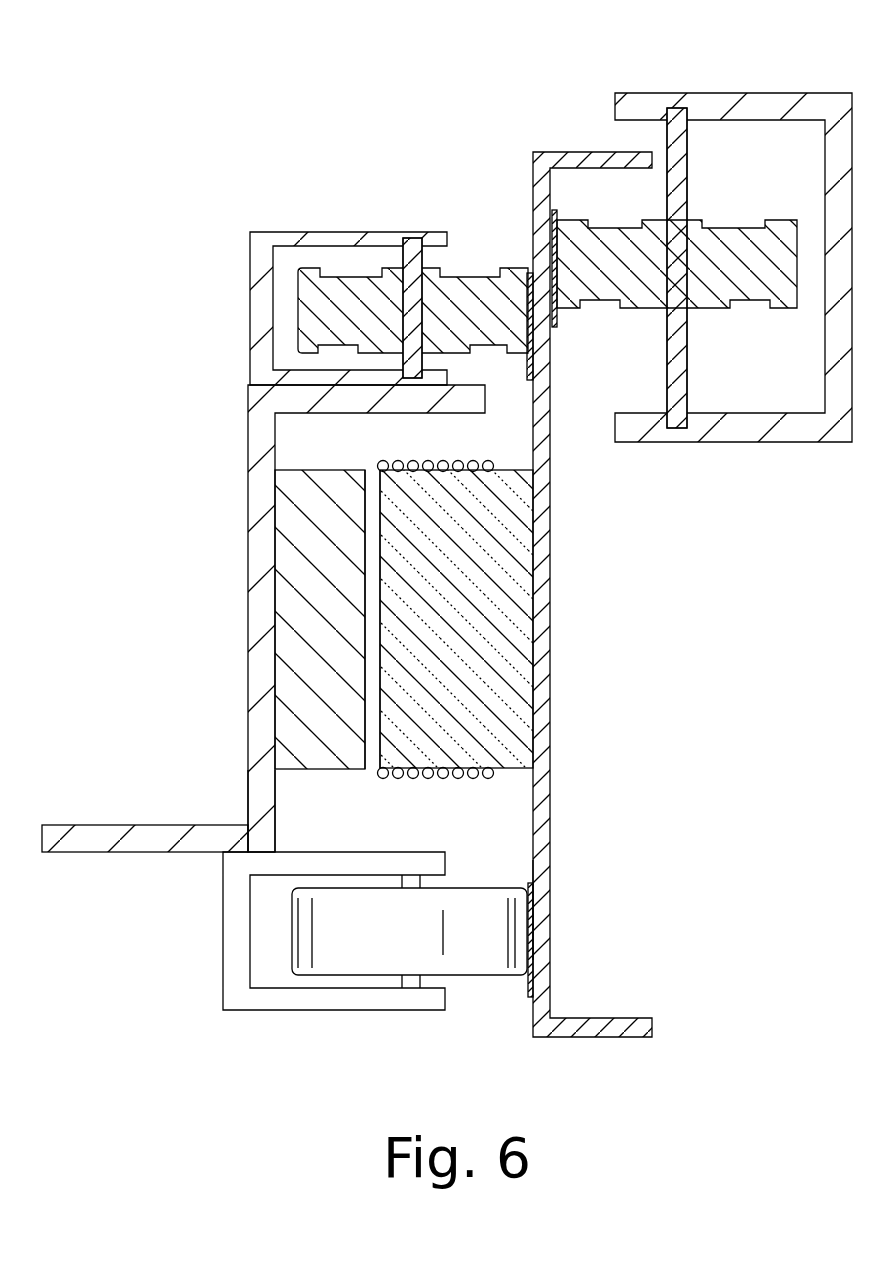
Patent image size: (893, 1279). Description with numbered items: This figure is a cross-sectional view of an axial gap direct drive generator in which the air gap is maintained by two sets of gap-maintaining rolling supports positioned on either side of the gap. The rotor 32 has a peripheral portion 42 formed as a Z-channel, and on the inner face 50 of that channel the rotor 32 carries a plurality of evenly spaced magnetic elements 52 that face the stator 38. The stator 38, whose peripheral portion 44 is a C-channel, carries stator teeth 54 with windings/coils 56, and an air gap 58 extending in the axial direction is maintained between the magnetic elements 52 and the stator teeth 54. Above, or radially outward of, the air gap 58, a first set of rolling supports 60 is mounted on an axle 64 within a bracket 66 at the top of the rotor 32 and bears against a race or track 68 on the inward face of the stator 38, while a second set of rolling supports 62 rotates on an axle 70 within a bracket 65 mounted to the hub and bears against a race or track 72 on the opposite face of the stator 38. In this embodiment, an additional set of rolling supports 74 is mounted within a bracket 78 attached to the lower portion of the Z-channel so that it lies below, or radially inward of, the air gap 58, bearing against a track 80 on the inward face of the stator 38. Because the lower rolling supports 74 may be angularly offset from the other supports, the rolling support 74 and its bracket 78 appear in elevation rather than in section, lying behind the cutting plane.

The rotor 32 is at (248, 528).
The stator 38 is at (553, 572).
The peripheral portion of the rotor 42 is at (255, 648).
The peripheral portion of the stator 44 is at (549, 880).
The inner face of the Z-channel 50 is at (267, 785).
The magnetic elements 52 is at (300, 490).
The stator teeth 54 is at (508, 505).
The windings/coils 56 is at (428, 777).
The air gap 58 is at (370, 485).
The first set of rolling supports 60 is at (490, 285).
The second set of rolling supports 62 is at (737, 240).
The axle 64 is at (411, 245).
The bracket 65 is at (760, 100).
The bracket 66 is at (255, 270).
The race or track 68 is at (527, 360).
The axle 70 is at (687, 356).
The race or track 72 is at (557, 312).
The set of rolling supports 74 is at (478, 966).
The bracket 78 is at (296, 1006).
The track 80 is at (529, 885).